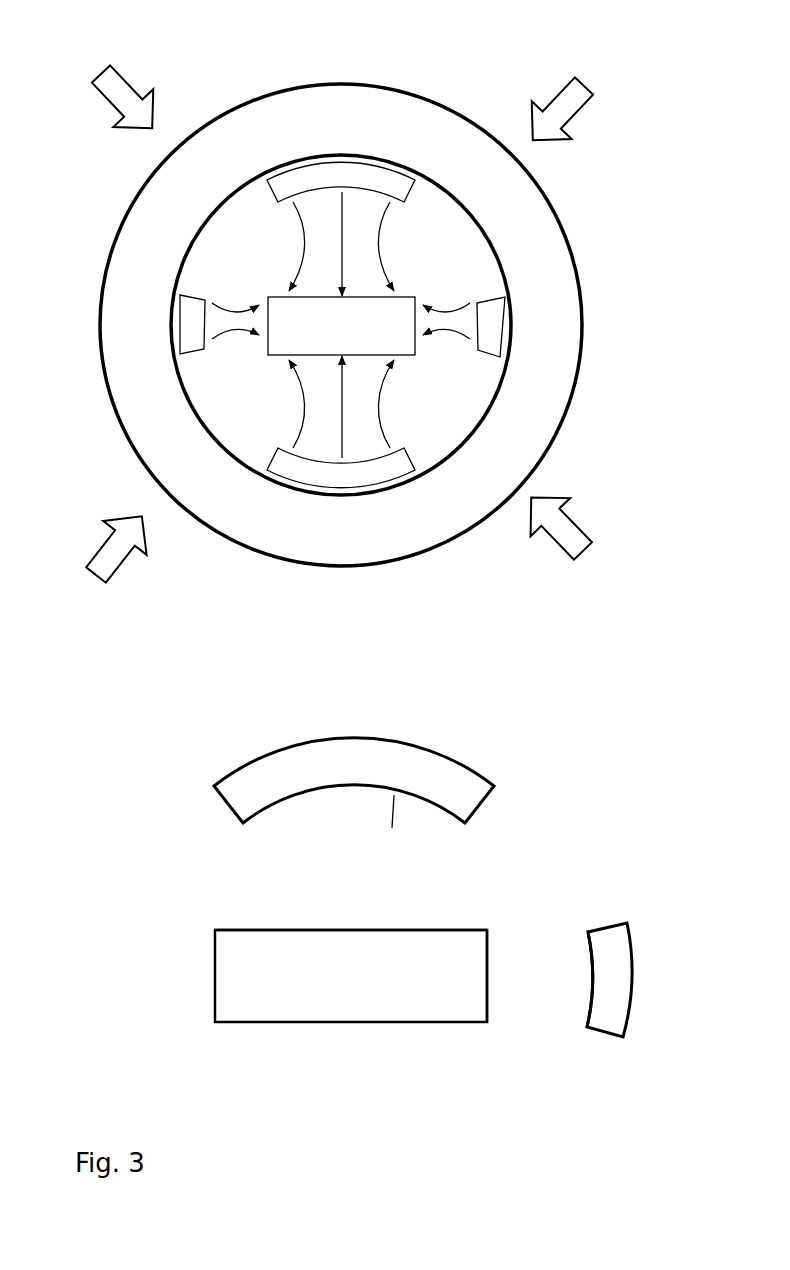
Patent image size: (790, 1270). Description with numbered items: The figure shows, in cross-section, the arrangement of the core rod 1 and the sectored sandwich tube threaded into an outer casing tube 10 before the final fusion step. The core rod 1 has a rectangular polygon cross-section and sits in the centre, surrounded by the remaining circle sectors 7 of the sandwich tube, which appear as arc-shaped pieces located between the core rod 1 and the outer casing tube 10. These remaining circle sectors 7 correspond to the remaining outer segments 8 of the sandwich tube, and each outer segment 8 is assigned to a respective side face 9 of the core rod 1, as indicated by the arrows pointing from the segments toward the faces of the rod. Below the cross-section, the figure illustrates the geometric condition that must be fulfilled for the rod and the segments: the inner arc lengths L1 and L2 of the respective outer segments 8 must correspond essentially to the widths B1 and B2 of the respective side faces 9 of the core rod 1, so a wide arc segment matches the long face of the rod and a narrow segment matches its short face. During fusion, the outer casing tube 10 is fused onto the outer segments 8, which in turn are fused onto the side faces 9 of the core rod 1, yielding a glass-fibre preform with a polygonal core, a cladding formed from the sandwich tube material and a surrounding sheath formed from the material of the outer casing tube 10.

The core rod 1 is at (351, 659).
The circle sectors 7 is at (342, 327).
The outer segments 8 is at (337, 166).
The side face 9 is at (266, 296).
The outer casing tube 10 is at (527, 237).
The inner arc length L1 is at (590, 972).
The inner arc length L2 is at (392, 828).
The width of side face B1 is at (488, 972).
The width of side face B2 is at (275, 930).